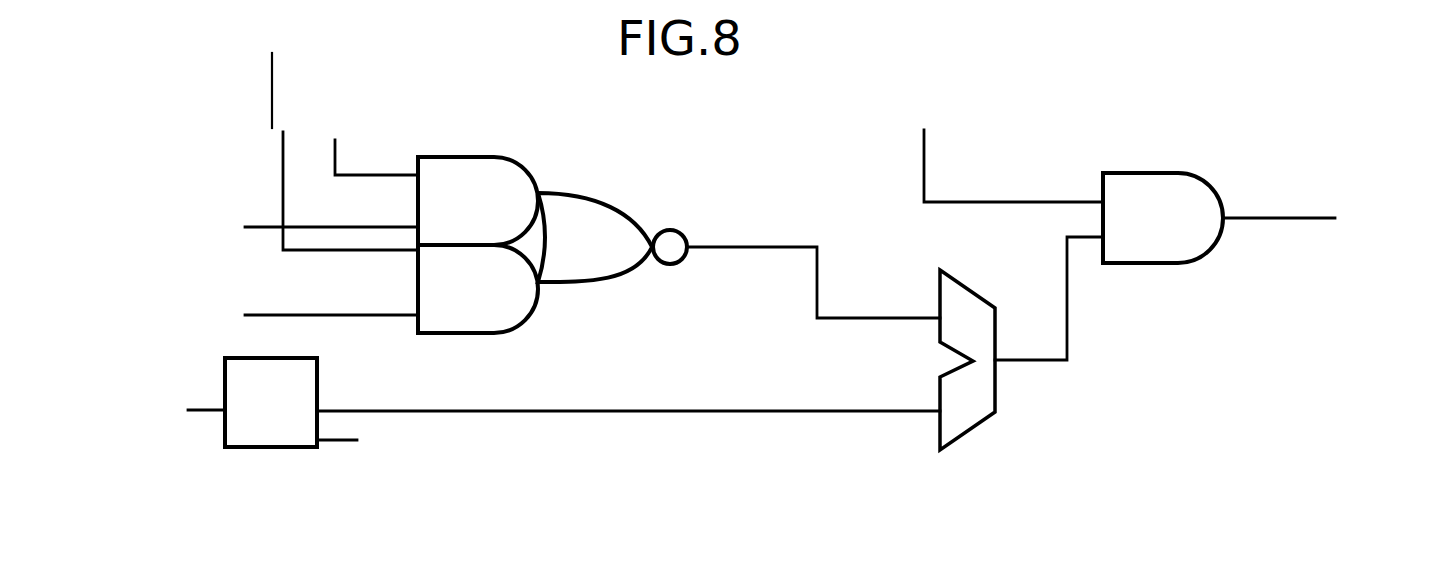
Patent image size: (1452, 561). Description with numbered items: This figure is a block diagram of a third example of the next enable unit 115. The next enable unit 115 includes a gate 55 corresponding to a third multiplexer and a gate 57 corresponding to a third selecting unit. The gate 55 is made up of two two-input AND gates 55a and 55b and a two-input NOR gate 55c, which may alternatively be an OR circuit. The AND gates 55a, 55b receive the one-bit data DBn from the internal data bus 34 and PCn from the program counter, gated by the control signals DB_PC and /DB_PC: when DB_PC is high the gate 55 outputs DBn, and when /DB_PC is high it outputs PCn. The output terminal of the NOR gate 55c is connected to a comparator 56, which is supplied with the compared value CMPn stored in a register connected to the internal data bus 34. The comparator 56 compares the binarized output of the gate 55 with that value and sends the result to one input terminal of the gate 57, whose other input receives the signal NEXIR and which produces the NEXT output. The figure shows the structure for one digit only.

The next enable unit 115 is at (1092, 127).
The gate 55 is at (553, 295).
The two-input AND gate 55a is at (531, 165).
The two-input AND gate 55b is at (480, 334).
The two-input NOR gate 55c is at (650, 220).
The comparator 56 is at (982, 423).
The gate 57 is at (1217, 188).
The internal data bus 34 is at (159, 409).